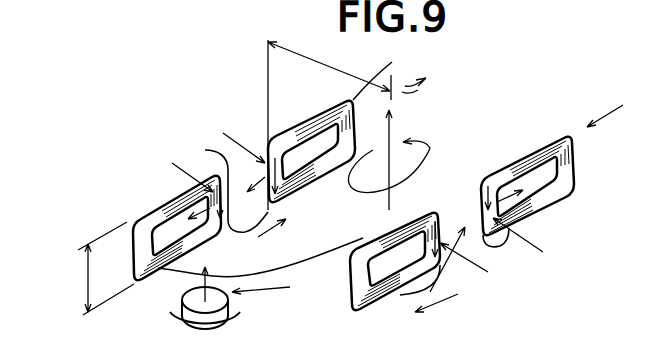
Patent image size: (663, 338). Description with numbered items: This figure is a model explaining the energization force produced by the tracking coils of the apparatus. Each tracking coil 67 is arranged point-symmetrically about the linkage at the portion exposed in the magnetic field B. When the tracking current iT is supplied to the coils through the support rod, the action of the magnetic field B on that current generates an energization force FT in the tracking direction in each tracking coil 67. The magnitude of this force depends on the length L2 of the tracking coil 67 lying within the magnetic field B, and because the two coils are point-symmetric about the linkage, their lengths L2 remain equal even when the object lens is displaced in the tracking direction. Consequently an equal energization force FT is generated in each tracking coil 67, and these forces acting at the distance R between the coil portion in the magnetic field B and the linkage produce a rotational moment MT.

The tracking coil 67 is at (216, 239).
The magnetic field B is at (359, 208).
The energization force FT is at (198, 224).
The tracking current iT is at (625, 133).
The rotational moment MT is at (402, 160).
The distance between tracking coil part within the magnetic field and the linkage R is at (329, 125).
The length of the tracking coil within the magnetic field L2 is at (94, 268).